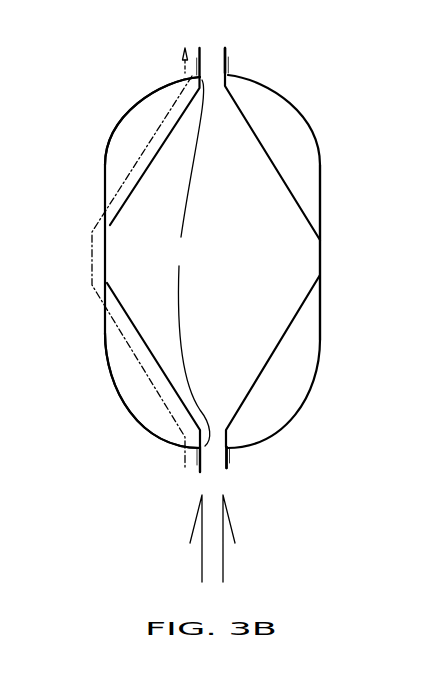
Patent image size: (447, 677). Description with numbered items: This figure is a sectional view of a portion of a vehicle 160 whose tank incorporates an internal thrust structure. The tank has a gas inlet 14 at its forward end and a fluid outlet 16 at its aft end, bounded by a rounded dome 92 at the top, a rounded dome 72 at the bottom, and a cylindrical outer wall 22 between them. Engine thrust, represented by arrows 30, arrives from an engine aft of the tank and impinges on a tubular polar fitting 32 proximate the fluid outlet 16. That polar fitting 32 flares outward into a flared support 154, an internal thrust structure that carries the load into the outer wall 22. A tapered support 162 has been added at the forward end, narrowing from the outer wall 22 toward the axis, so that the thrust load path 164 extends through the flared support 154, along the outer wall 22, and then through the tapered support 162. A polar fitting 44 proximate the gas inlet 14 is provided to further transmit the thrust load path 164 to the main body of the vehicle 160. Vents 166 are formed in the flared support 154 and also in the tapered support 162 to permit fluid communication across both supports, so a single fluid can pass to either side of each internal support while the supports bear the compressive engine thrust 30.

The gas inlet 14 is at (207, 50).
The fluid outlet 16 is at (207, 472).
The outer wall 22 is at (320, 243).
The engine thrust 30 is at (223, 560).
The polar fitting 32 is at (227, 468).
The polar fitting 44 is at (226, 50).
The rounded dome 72 is at (133, 412).
The rounded dome 92 is at (120, 123).
The flared support 154 is at (292, 325).
The vehicle 160 is at (325, 93).
The tapered support 162 is at (290, 190).
The thrust load path 164 is at (92, 262).
The vents 166 is at (110, 225).